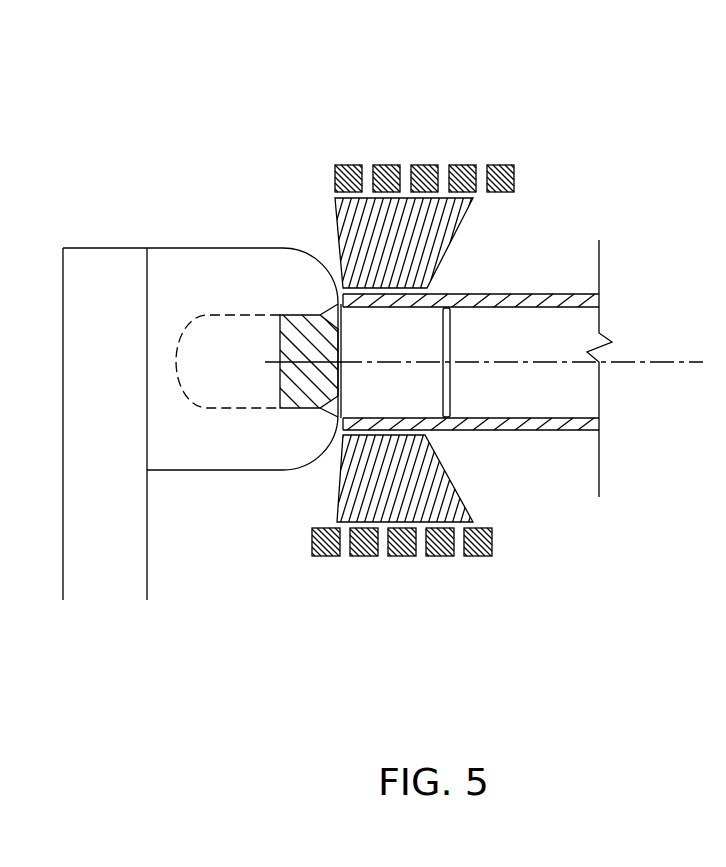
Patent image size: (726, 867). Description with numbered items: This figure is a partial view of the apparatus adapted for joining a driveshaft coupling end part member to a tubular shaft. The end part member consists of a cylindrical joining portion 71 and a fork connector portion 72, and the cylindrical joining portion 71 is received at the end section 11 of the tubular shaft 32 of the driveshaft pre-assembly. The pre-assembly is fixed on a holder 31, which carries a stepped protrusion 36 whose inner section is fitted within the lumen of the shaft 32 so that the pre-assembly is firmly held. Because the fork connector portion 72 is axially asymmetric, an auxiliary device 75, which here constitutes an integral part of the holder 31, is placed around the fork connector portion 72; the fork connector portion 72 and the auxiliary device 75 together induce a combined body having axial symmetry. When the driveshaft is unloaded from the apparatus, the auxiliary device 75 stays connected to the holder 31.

The end section of tubular shaft 11 is at (496, 431).
The holder 31 is at (127, 548).
The shaft 32 is at (390, 172).
The stepped protrusion 36 is at (446, 246).
The cylindrical joining portion 71 is at (418, 398).
The fork connector portion 72 is at (220, 360).
The auxiliary device 75 is at (196, 272).